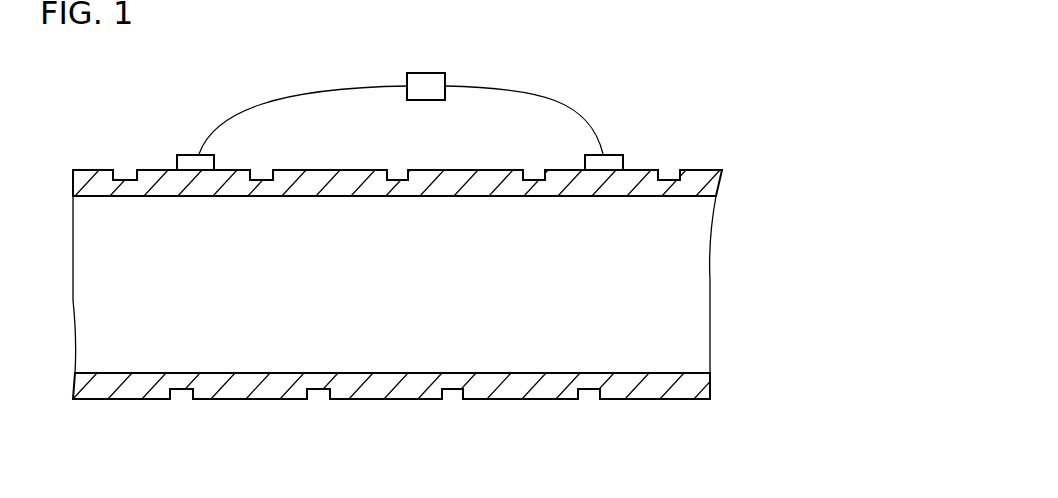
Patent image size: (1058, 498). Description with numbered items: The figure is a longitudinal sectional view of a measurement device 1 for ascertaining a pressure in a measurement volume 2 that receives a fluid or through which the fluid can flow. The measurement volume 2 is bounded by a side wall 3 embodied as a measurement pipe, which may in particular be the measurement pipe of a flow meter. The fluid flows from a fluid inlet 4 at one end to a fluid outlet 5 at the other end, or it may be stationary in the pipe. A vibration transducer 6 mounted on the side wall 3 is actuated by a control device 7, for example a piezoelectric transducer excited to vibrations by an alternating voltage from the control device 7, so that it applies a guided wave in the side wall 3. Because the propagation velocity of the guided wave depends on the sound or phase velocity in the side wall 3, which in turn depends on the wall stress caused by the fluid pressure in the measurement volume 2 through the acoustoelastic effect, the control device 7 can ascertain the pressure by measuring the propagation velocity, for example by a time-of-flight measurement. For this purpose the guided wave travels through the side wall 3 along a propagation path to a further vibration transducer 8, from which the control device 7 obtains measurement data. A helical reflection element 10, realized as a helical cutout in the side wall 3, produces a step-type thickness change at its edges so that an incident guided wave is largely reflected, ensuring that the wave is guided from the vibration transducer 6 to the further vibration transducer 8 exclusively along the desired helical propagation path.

The measurement device 1 is at (487, 423).
The measurement volume 2 is at (387, 345).
The side wall 3 is at (633, 388).
The fluid inlet 4 is at (130, 310).
The fluid outlet 5 is at (740, 317).
The vibration transducer 6 is at (192, 154).
The control device 7 is at (421, 73).
The further vibration transducer 8 is at (615, 154).
The reflection element 10 is at (588, 405).